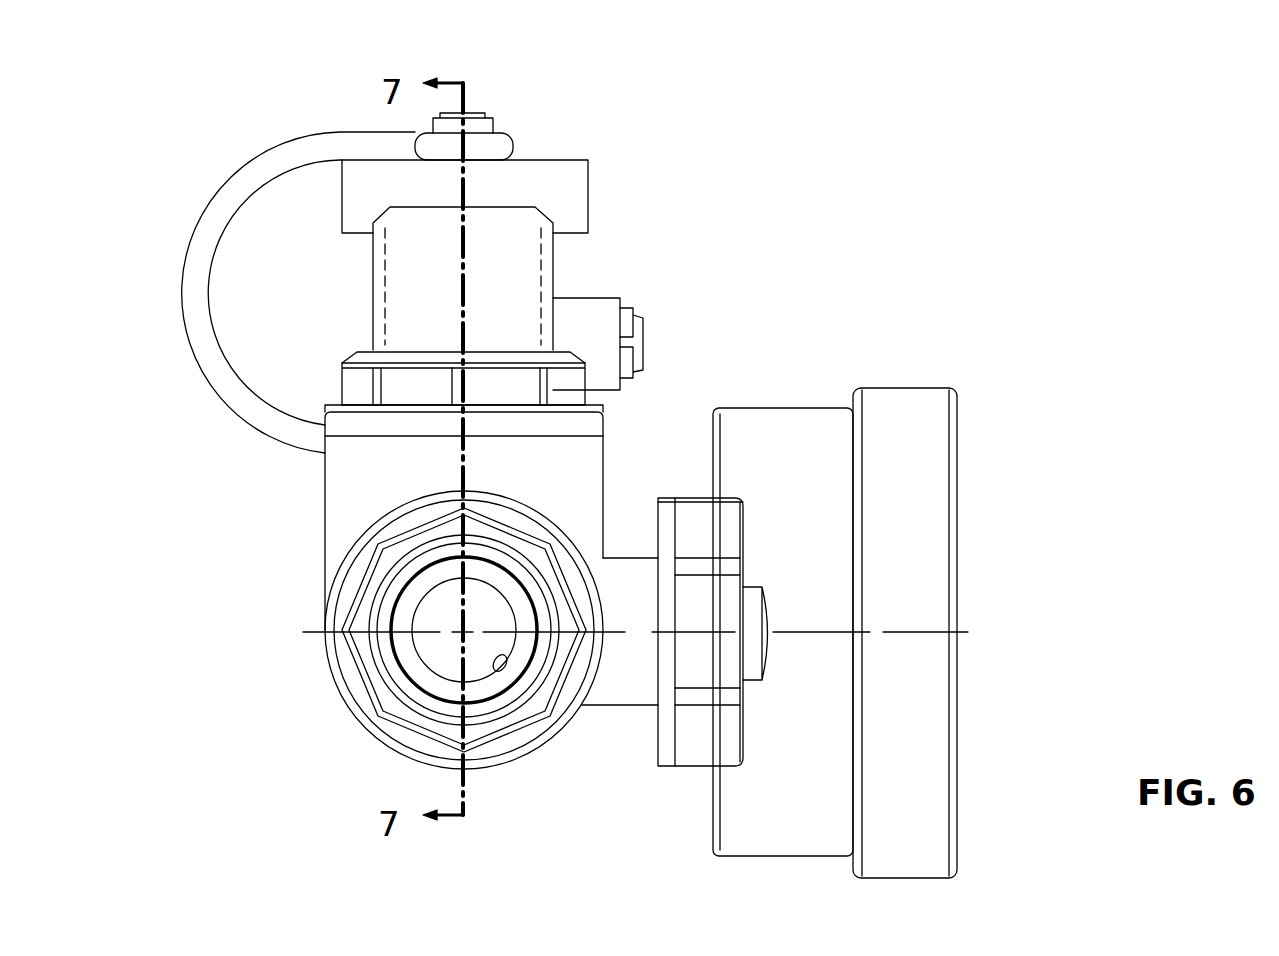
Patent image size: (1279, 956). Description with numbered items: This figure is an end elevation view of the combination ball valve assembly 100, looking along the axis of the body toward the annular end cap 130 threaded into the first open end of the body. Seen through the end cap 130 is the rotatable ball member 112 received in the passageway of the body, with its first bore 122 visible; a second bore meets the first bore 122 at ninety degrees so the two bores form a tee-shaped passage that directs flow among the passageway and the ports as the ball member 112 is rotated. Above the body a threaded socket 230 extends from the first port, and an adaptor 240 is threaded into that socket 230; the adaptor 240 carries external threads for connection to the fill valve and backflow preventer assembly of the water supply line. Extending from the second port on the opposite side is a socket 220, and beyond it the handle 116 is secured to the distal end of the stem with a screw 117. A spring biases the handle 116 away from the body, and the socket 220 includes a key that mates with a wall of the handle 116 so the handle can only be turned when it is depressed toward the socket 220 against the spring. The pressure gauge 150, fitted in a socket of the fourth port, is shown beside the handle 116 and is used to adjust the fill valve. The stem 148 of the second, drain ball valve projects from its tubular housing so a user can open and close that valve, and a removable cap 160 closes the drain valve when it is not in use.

The combination ball valve assembly 100 is at (893, 199).
The ball member 112 is at (407, 658).
The handle 116 is at (728, 522).
The screw 117 is at (763, 600).
The first bore 122 is at (500, 672).
The annular end cap 130 is at (397, 727).
The stem 148 is at (640, 317).
The pressure gauge 150 is at (907, 397).
The removable cap 160 is at (565, 178).
The socket 220 is at (633, 705).
The socket 230 is at (582, 468).
The adaptor 240 is at (535, 280).